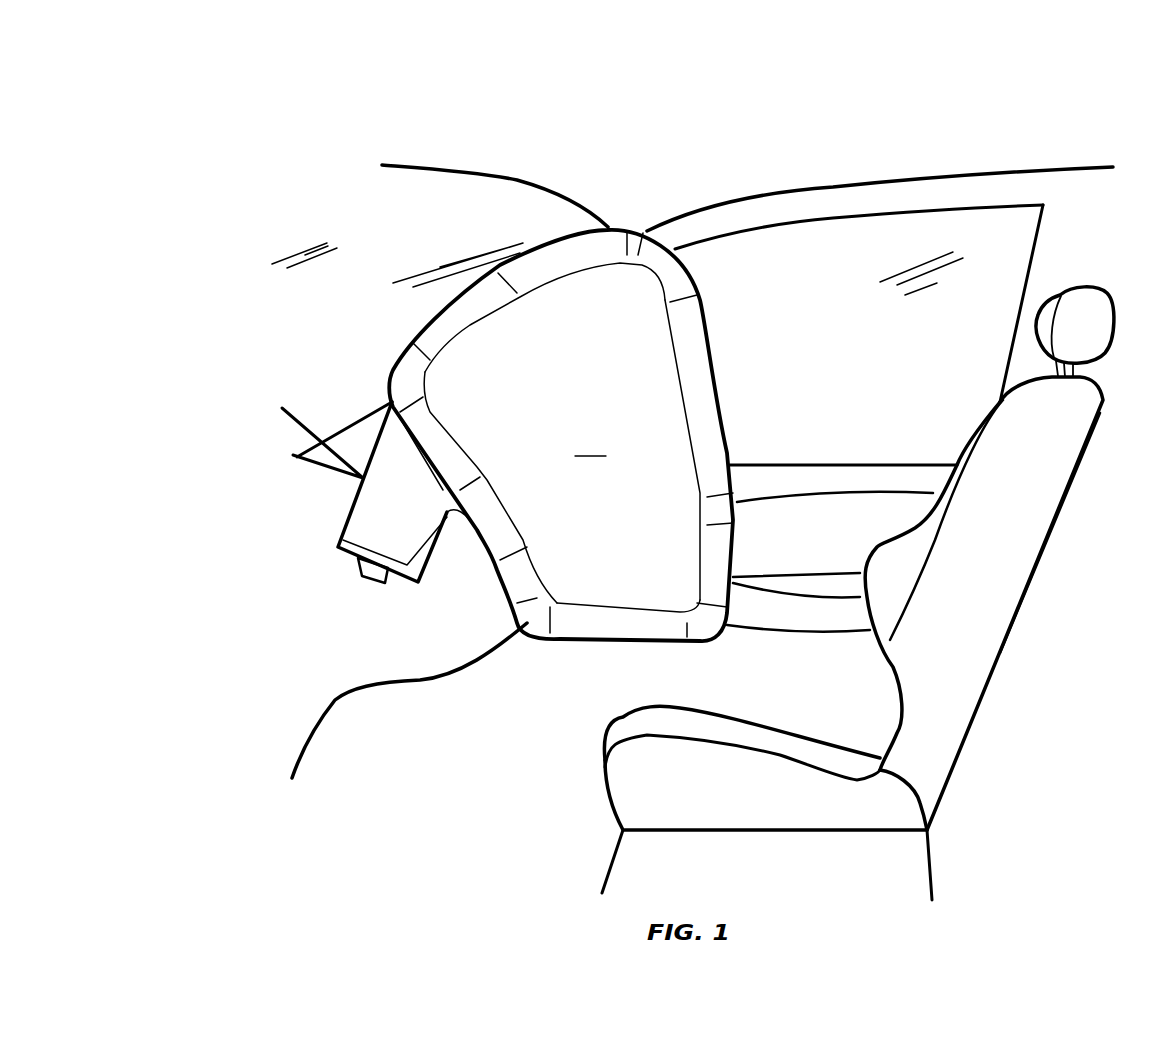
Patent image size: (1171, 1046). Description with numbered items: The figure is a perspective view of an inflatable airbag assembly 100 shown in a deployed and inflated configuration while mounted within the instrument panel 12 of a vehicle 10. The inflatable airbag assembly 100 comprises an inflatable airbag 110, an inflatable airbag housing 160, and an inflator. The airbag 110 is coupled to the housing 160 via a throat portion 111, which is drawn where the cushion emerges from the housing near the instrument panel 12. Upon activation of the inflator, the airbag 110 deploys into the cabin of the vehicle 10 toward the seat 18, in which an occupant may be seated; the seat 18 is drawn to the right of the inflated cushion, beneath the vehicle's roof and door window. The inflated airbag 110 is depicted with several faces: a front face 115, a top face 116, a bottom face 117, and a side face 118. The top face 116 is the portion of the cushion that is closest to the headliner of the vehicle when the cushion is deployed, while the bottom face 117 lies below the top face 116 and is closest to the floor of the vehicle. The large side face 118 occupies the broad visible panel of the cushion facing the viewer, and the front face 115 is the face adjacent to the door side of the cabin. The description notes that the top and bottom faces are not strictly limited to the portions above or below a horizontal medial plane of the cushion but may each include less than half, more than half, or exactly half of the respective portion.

The vehicle 10 is at (795, 170).
The instrument panel 12 is at (407, 656).
The seat 18 is at (943, 667).
The inflatable airbag assembly 100 is at (507, 380).
The inflatable airbag 110 is at (591, 410).
The throat portion 111 is at (393, 452).
The front face 115 is at (707, 328).
The top face 116 is at (552, 238).
The bottom face 117 is at (588, 642).
The side face 118 is at (503, 487).
The inflatable airbag housing 160 is at (349, 474).